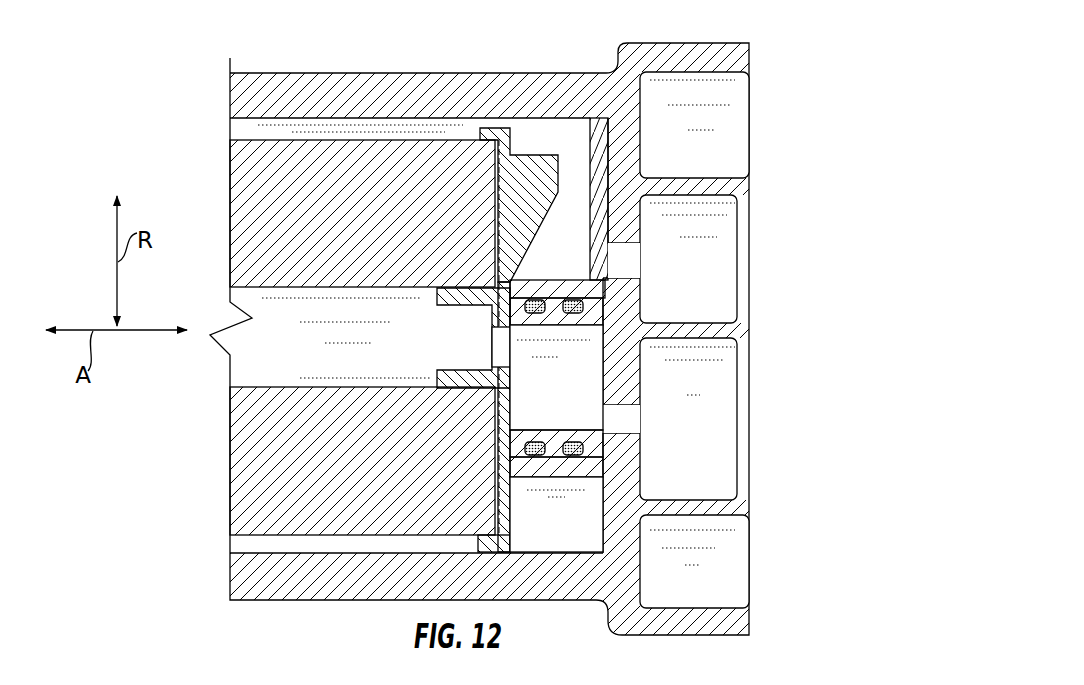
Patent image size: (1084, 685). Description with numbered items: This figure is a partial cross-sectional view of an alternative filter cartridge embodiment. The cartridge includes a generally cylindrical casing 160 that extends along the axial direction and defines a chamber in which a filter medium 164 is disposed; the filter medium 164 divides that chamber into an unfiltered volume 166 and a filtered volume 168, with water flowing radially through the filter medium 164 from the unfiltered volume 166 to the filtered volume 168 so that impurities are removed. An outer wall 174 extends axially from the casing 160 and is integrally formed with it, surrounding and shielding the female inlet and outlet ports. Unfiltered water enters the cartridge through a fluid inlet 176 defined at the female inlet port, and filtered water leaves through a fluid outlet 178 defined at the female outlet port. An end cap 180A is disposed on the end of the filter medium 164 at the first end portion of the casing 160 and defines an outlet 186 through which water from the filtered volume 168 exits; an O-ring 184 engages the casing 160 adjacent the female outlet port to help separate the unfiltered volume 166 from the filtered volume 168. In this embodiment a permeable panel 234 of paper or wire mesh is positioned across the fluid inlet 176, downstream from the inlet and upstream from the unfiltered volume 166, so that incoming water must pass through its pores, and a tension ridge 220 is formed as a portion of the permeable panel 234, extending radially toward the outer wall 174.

The casing 160 is at (382, 106).
The outer wall 174 is at (547, 73).
The tension ridge 220 is at (611, 111).
The permeable panel 234 is at (585, 203).
The fluid inlet 176 is at (627, 254).
The fluid outlet 178 is at (621, 418).
The end cap 180A is at (512, 504).
The O-ring 184 is at (576, 456).
The outlet 186 is at (521, 352).
The filtered volume 168 is at (243, 372).
The filter medium 164 is at (243, 497).
The unfiltered volume 166 is at (272, 546).